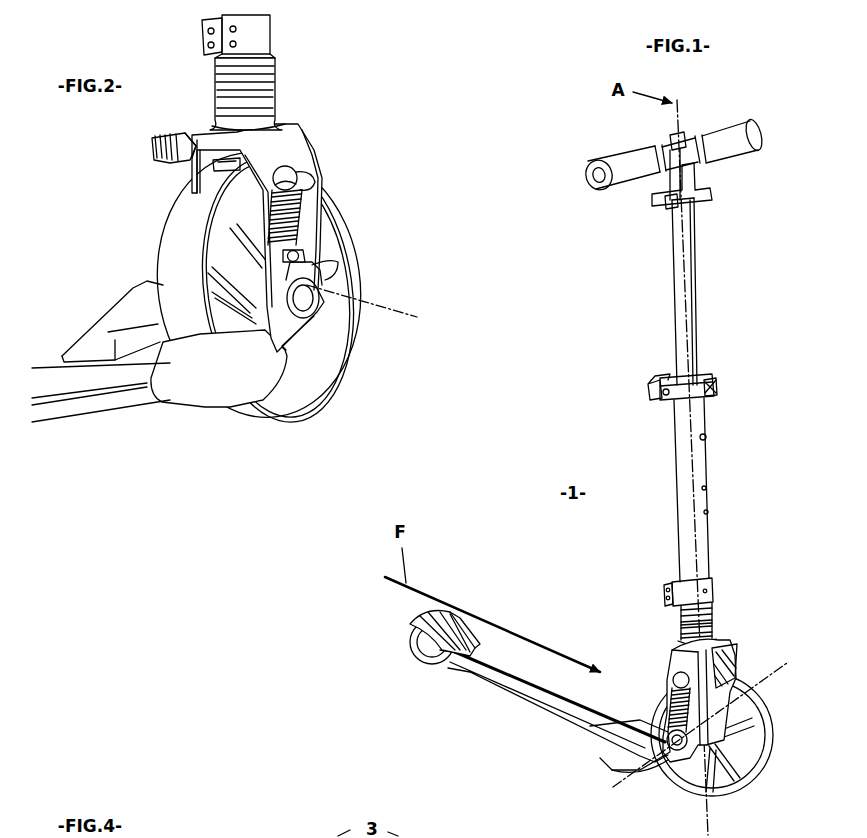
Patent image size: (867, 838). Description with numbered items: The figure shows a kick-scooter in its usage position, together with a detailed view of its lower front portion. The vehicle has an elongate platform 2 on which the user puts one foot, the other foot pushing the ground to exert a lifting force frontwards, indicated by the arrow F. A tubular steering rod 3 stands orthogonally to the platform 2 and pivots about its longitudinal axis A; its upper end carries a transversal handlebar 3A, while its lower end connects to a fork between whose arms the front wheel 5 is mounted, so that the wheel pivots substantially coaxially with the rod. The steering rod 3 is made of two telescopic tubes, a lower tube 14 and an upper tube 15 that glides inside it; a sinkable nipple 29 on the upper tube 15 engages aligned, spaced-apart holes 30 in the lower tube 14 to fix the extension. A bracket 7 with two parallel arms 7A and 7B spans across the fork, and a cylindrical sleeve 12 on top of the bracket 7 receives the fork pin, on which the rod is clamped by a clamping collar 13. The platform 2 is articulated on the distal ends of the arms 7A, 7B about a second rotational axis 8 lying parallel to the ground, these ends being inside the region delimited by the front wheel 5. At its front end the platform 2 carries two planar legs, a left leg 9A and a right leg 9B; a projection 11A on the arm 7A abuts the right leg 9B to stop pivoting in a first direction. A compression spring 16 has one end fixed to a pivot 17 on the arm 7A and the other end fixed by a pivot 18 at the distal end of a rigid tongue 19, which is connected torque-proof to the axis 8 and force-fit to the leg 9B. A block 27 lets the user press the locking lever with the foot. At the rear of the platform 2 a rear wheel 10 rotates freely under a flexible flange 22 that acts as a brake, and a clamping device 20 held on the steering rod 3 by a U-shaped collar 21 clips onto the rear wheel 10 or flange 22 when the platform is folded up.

In FIG. 2, the platform 2 is at (112, 405).
In FIG. 1, the platform 2 is at (500, 680).
In FIG. 1, the steering rod 3 is at (647, 312).
In FIG. 1, the handlebar 3A is at (727, 122).
In FIG. 2, the front wheel 5 is at (328, 394).
In FIG. 1, the front wheel 5 is at (770, 777).
In FIG. 2, the bracket 7 is at (230, 265).
In FIG. 1, the bracket 7 is at (699, 680).
In FIG. 2, the arm of the bracket 7A is at (277, 193).
In FIG. 1, the arm of the bracket 7A is at (683, 660).
In FIG. 2, the arm of the bracket 7B is at (194, 201).
In FIG. 1, the arm of the bracket 7B is at (740, 652).
In FIG. 2, the second rotational axis 8 is at (404, 323).
In FIG. 1, the second rotational axis 8 is at (786, 669).
In FIG. 2, the left leg 9A is at (148, 307).
In FIG. 2, the right leg 9B is at (249, 369).
In FIG. 1, the right leg 9B is at (622, 746).
In FIG. 1, the rear wheel 10 is at (409, 633).
In FIG. 2, the projection 11A is at (290, 356).
In FIG. 2, the cylindrical sleeve 12 is at (259, 100).
In FIG. 1, the cylindrical sleeve 12 is at (688, 620).
In FIG. 2, the clamping collar 13 is at (273, 28).
In FIG. 1, the clamping collar 13 is at (708, 590).
In FIG. 1, the lower tube 14 is at (686, 460).
In FIG. 1, the upper tube 15 is at (677, 268).
In FIG. 2, the compression spring 16 is at (320, 218).
In FIG. 1, the compression spring 16 is at (662, 706).
In FIG. 2, the pivot 17 is at (306, 180).
In FIG. 1, the pivot 17 is at (675, 678).
In FIG. 2, the pivot 18 is at (301, 254).
In FIG. 1, the pivot 18 is at (676, 750).
In FIG. 2, the rigid tongue 19 is at (301, 272).
In FIG. 1, the clamping device 20 is at (650, 391).
In FIG. 1, the collar 21 is at (713, 379).
In FIG. 1, the flange 22 is at (415, 609).
In FIG. 2, the block 27 is at (157, 147).
In FIG. 1, the sinkable nipple 29 is at (715, 436).
In FIG. 1, the holes 30 is at (708, 512).